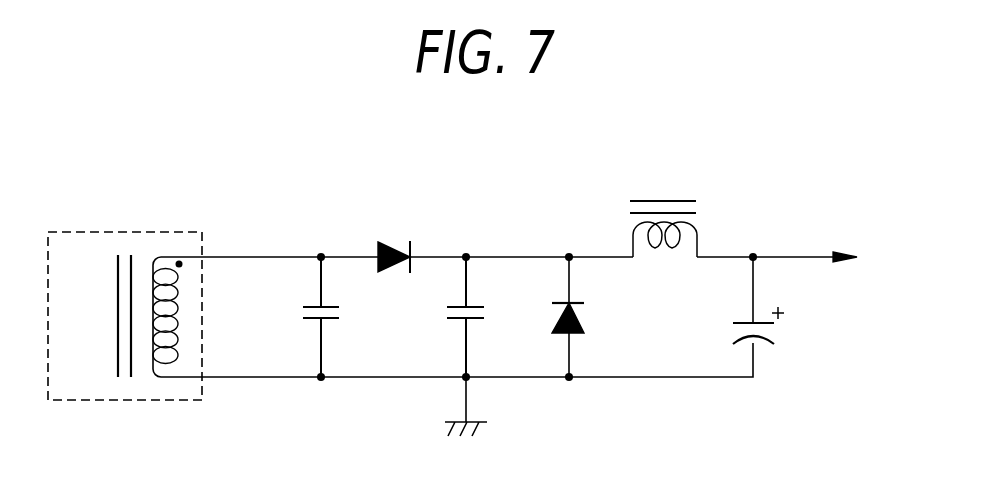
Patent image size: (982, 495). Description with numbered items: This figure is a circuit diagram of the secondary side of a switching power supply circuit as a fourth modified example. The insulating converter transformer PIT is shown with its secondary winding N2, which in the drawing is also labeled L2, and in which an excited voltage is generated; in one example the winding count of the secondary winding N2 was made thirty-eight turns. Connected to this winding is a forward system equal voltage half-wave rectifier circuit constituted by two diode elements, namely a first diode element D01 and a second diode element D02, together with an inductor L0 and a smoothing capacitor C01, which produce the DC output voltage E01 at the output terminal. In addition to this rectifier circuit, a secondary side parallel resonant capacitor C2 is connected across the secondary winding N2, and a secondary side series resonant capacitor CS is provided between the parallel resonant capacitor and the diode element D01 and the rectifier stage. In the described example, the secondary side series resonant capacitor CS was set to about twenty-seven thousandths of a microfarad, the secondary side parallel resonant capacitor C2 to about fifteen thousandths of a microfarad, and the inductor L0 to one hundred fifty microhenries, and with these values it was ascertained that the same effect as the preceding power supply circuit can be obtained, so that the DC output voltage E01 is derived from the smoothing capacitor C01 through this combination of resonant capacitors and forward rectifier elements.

The insulating converter transformer PIT is at (125, 296).
The secondary winding N2 is at (209, 317).
The secondary winding inductance L2 is at (185, 306).
The diode element D01 is at (391, 239).
The secondary side parallel resonant capacitor C2 is at (333, 317).
The secondary side series resonant capacitor CS is at (478, 317).
The diode element D02 is at (597, 317).
The inductor L0 is at (663, 210).
The smoothing capacitor C01 is at (785, 330).
The DC output voltage E01 is at (872, 260).